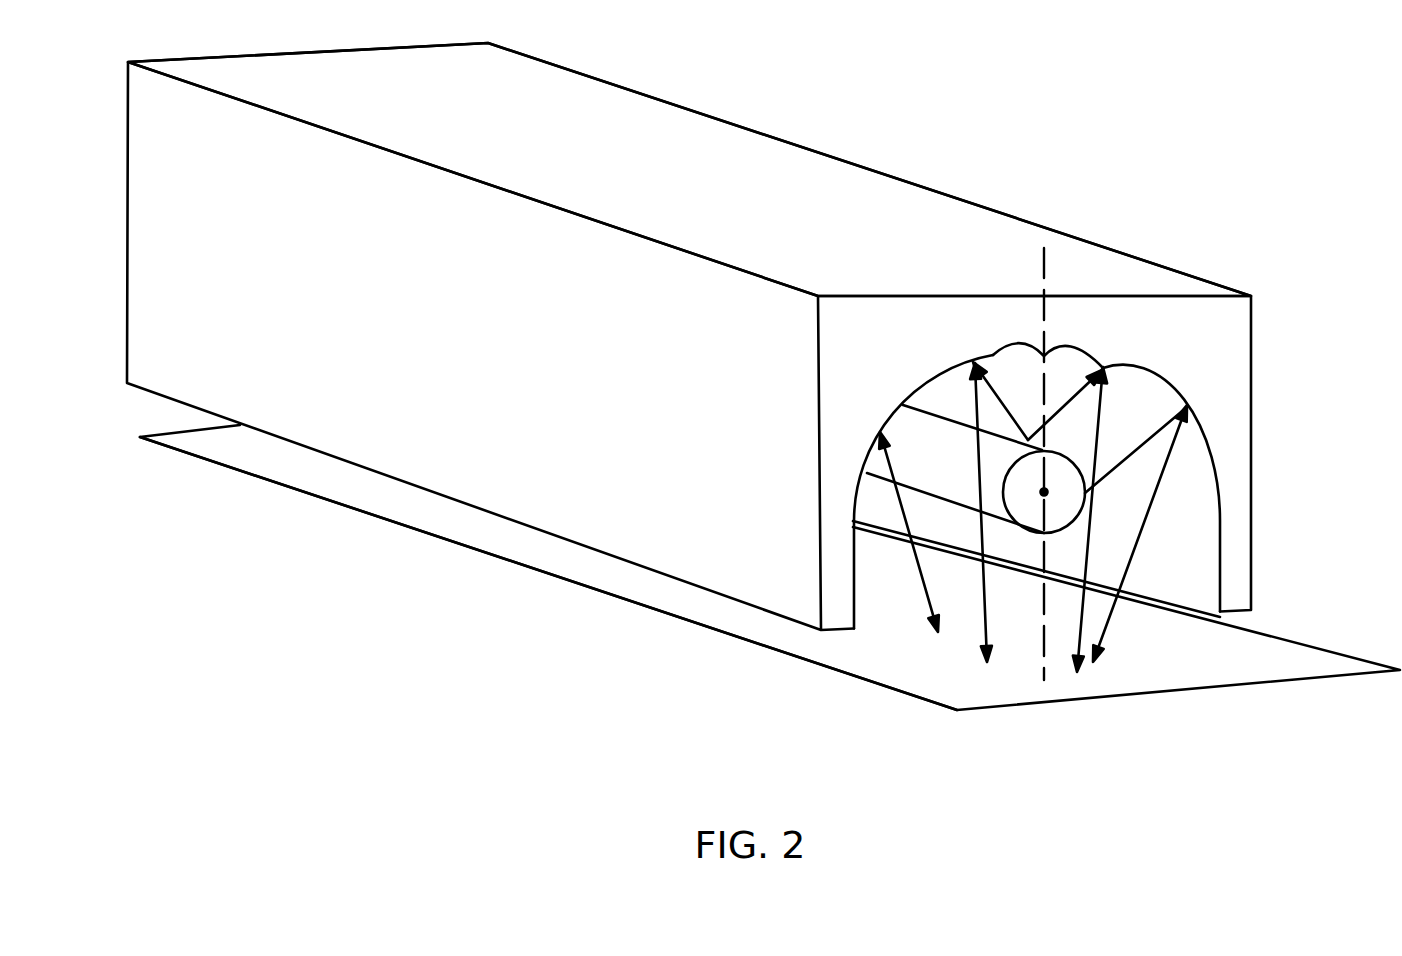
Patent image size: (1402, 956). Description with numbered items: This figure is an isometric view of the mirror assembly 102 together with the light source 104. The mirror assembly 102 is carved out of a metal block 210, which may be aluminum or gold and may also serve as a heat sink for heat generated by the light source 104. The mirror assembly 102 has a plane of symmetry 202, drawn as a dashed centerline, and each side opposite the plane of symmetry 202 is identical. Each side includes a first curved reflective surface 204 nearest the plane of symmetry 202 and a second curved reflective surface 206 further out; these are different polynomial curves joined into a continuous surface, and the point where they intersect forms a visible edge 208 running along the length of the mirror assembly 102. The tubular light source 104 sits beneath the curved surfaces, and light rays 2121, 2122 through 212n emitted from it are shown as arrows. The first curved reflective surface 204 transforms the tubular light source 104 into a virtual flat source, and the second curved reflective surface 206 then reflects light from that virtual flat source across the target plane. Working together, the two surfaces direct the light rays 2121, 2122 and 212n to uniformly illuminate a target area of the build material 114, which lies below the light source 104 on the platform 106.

The mirror assembly 102 is at (918, 183).
The light source 104 is at (1033, 530).
The platform 106 is at (1063, 700).
The build material 114 is at (855, 660).
The plane of symmetry 202 is at (1045, 267).
The first curved reflective surface 204 is at (1015, 345).
The second curved reflective surface 206 is at (925, 380).
The edge 208 is at (993, 356).
The metal block 210 is at (685, 127).
The light ray 2121 is at (920, 577).
The light ray 2122 is at (975, 470).
The light ray 212n is at (1153, 498).